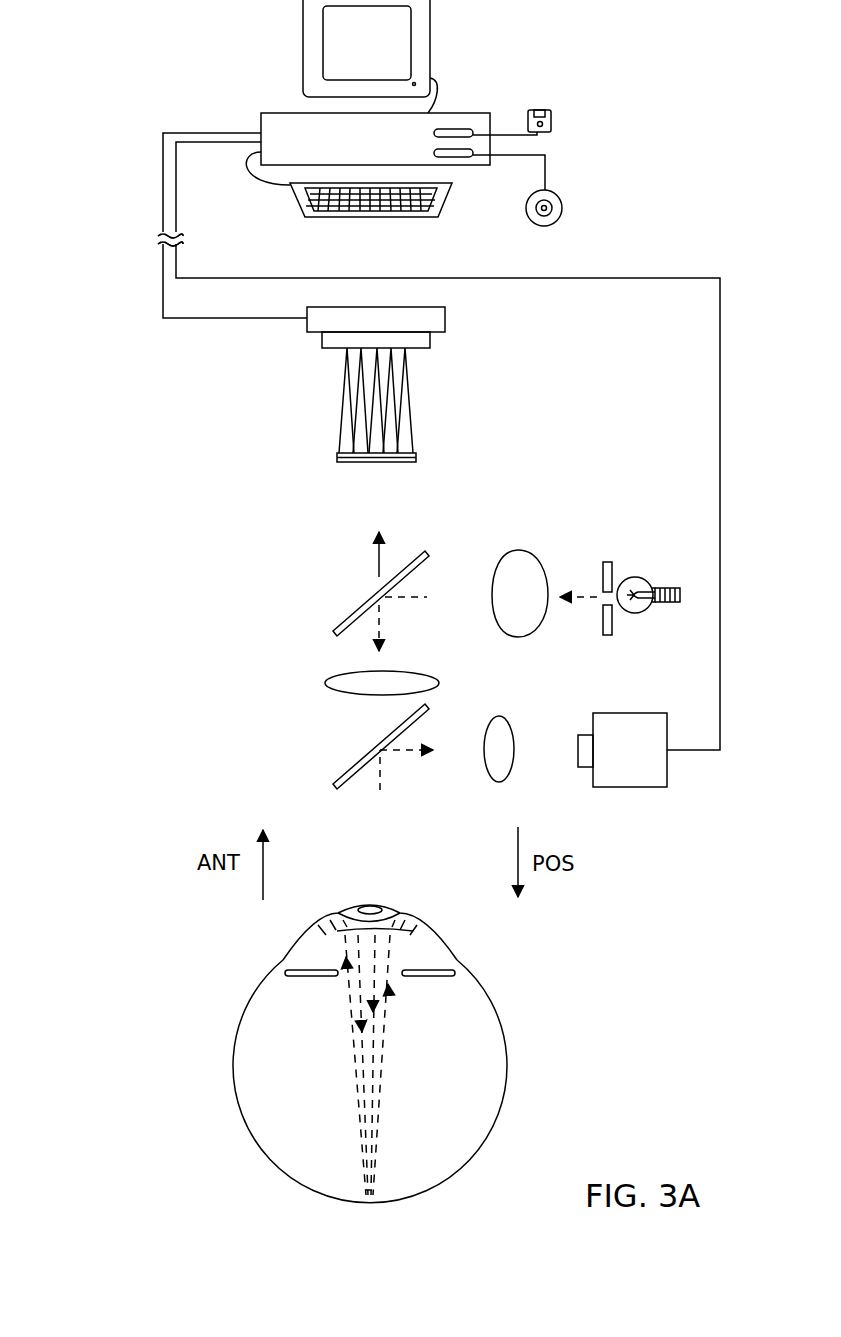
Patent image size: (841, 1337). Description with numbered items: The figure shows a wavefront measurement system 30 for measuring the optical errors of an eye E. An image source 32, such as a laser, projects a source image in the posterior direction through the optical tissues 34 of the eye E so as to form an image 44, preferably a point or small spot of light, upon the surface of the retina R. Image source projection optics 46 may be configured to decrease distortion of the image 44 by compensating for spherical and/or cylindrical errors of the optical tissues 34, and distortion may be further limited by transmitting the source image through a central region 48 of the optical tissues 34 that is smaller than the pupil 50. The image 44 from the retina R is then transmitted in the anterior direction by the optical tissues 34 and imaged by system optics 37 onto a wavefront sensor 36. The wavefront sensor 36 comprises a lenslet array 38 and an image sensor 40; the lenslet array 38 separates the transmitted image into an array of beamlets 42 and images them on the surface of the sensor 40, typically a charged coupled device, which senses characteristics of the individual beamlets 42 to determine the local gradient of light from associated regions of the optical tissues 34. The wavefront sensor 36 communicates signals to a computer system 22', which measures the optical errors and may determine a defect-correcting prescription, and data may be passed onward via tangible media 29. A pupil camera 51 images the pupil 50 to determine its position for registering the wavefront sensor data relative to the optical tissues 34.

The wavefront measurement system 30 is at (133, 58).
The computer system 22' is at (434, 108).
The tangible media 29 is at (551, 122).
The wavefront sensor 36 is at (465, 300).
The image sensor 40 is at (330, 348).
The beamlets 42 is at (363, 390).
The lenslet array 38 is at (337, 456).
The image source projection optics 46 is at (518, 550).
The image source 32 is at (636, 548).
The system optics 37 is at (325, 683).
The pupil camera 51 is at (655, 787).
The central region 48 is at (368, 905).
The optical tissues 34 is at (394, 898).
The pupil 50 is at (455, 972).
The eye E is at (240, 1020).
The image 44 is at (368, 1198).
The retina R is at (400, 1182).